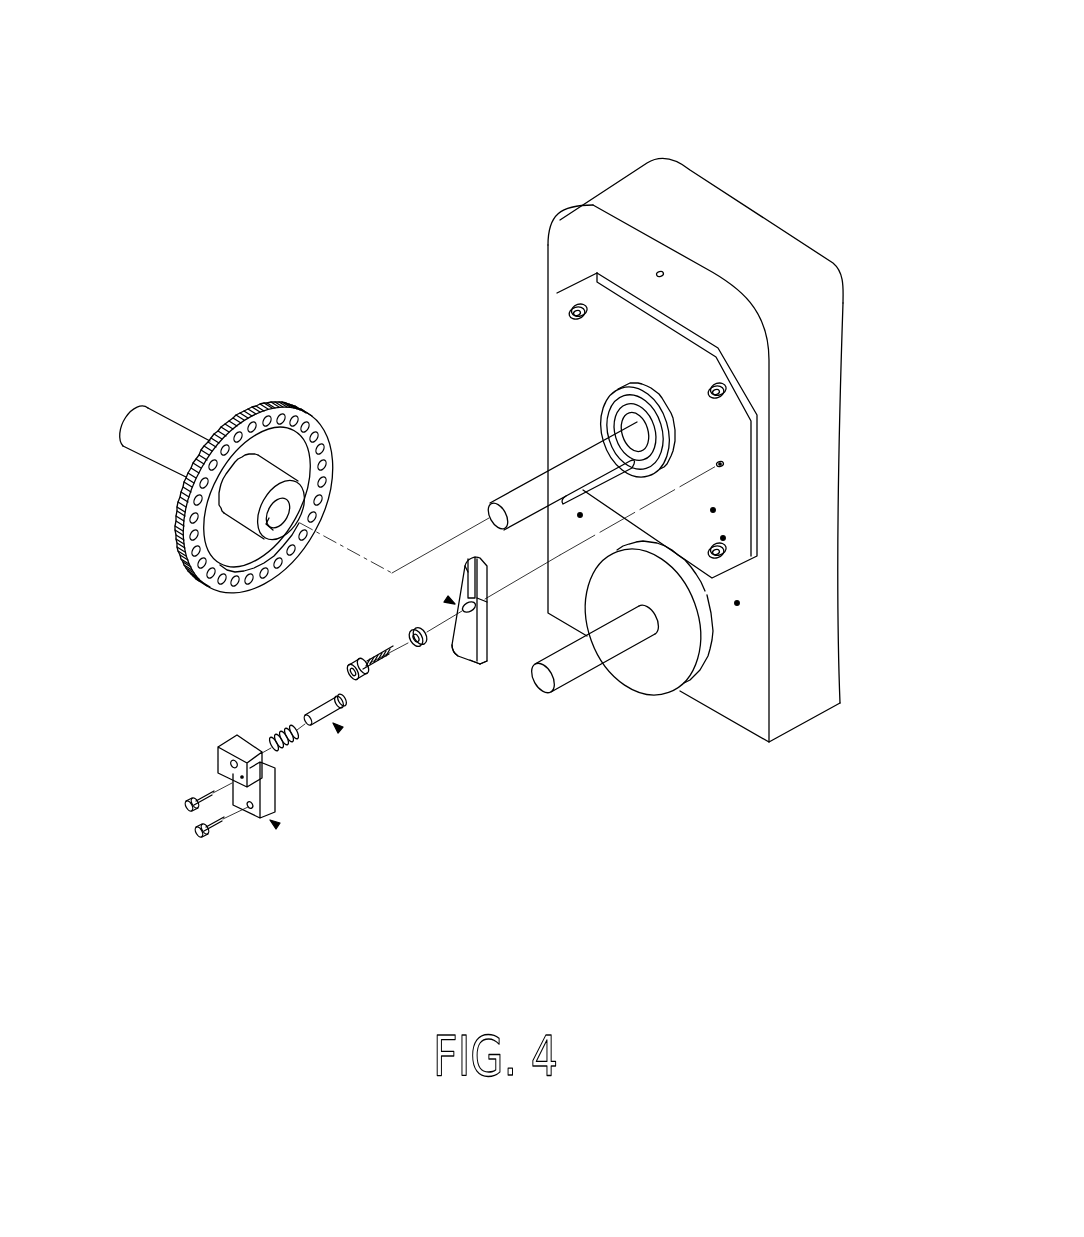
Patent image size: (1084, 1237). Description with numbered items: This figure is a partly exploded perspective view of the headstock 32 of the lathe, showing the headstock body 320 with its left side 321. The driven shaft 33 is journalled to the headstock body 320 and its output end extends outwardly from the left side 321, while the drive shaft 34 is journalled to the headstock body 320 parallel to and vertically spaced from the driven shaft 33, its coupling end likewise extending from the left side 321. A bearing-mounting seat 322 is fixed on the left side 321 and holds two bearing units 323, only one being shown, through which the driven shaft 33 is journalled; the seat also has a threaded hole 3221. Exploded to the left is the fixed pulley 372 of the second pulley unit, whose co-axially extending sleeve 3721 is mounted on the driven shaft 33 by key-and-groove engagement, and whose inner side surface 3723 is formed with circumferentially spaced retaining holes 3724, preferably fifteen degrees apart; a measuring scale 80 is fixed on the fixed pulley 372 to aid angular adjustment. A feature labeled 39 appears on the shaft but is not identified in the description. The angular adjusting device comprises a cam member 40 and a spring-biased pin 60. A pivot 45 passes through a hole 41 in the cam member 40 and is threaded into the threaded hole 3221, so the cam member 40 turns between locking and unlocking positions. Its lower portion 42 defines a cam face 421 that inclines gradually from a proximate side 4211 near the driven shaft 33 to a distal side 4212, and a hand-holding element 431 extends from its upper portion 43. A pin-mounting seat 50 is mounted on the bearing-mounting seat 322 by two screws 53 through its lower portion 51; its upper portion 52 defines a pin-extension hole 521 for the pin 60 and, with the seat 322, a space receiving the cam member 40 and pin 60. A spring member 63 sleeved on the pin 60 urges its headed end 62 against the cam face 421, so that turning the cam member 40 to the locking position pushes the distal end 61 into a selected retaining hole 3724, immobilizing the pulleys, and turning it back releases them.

The headstock 32 is at (630, 170).
The headstock body 320 is at (713, 203).
The left side 321 is at (567, 232).
The bearing-mounting seat 322 is at (557, 323).
The bearing units 323 is at (650, 403).
The threaded hole 3221 is at (723, 460).
The driven shaft 33 is at (520, 432).
The key 39 is at (583, 487).
The drive shaft 34 is at (589, 676).
The fixed pulley 372 is at (260, 462).
The sleeve 3721 is at (230, 522).
The side surface 3723 is at (287, 408).
The retaining holes 3724 is at (318, 417).
The measuring scale 80 is at (178, 515).
The cam member 40 is at (443, 618).
The hole 41 is at (474, 606).
The lower portion 42 is at (466, 618).
The upper portion 43 is at (465, 564).
The hand-holding element 431 is at (472, 580).
The cam face 421 is at (465, 652).
The proximate side 4211 is at (453, 642).
The distal side 4212 is at (487, 665).
The pivot 45 is at (358, 660).
The pin-mounting seat 50 is at (247, 818).
The lower portion 51 is at (270, 803).
The upper portion 52 is at (189, 732).
The pin-extension hole 521 is at (222, 767).
The screws 53 is at (200, 835).
The spring-biased pin 60 is at (334, 730).
The distal end 61 is at (307, 713).
The headed end 62 is at (340, 709).
The spring member 63 is at (290, 742).